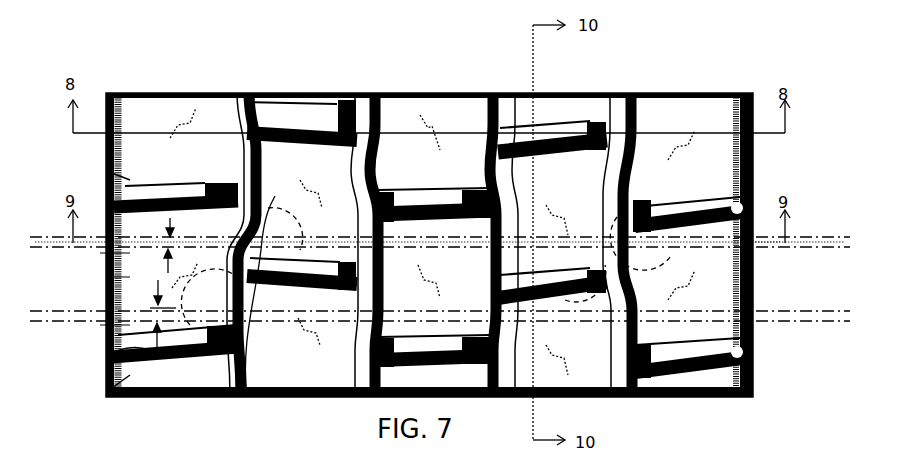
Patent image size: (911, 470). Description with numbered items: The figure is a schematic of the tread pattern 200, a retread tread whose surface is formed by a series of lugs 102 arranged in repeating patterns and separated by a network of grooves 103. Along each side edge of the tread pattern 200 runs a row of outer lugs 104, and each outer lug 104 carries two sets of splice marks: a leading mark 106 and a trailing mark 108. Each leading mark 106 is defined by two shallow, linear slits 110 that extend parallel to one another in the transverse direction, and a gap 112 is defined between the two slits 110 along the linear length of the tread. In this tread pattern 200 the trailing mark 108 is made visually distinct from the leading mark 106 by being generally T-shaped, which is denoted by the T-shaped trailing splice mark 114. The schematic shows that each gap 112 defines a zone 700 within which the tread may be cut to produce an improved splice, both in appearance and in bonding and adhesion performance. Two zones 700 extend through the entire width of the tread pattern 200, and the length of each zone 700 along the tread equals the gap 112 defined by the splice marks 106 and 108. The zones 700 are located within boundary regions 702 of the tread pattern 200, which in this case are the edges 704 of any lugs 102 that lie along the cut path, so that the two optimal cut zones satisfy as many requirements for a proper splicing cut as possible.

The lugs 102 is at (440, 100).
The grooves 103 is at (369, 92).
The outer lugs 104 is at (195, 82).
The leading mark 106 is at (90, 253).
The trailing mark 108 is at (90, 325).
The slits 110 is at (106, 277).
The gap 112 is at (106, 173).
The T-shaped trailing splice mark 114 is at (110, 355).
The tread pattern 200 is at (745, 72).
The zone 700 is at (812, 312).
The boundary regions 702 is at (273, 195).
The edges 704 is at (247, 398).